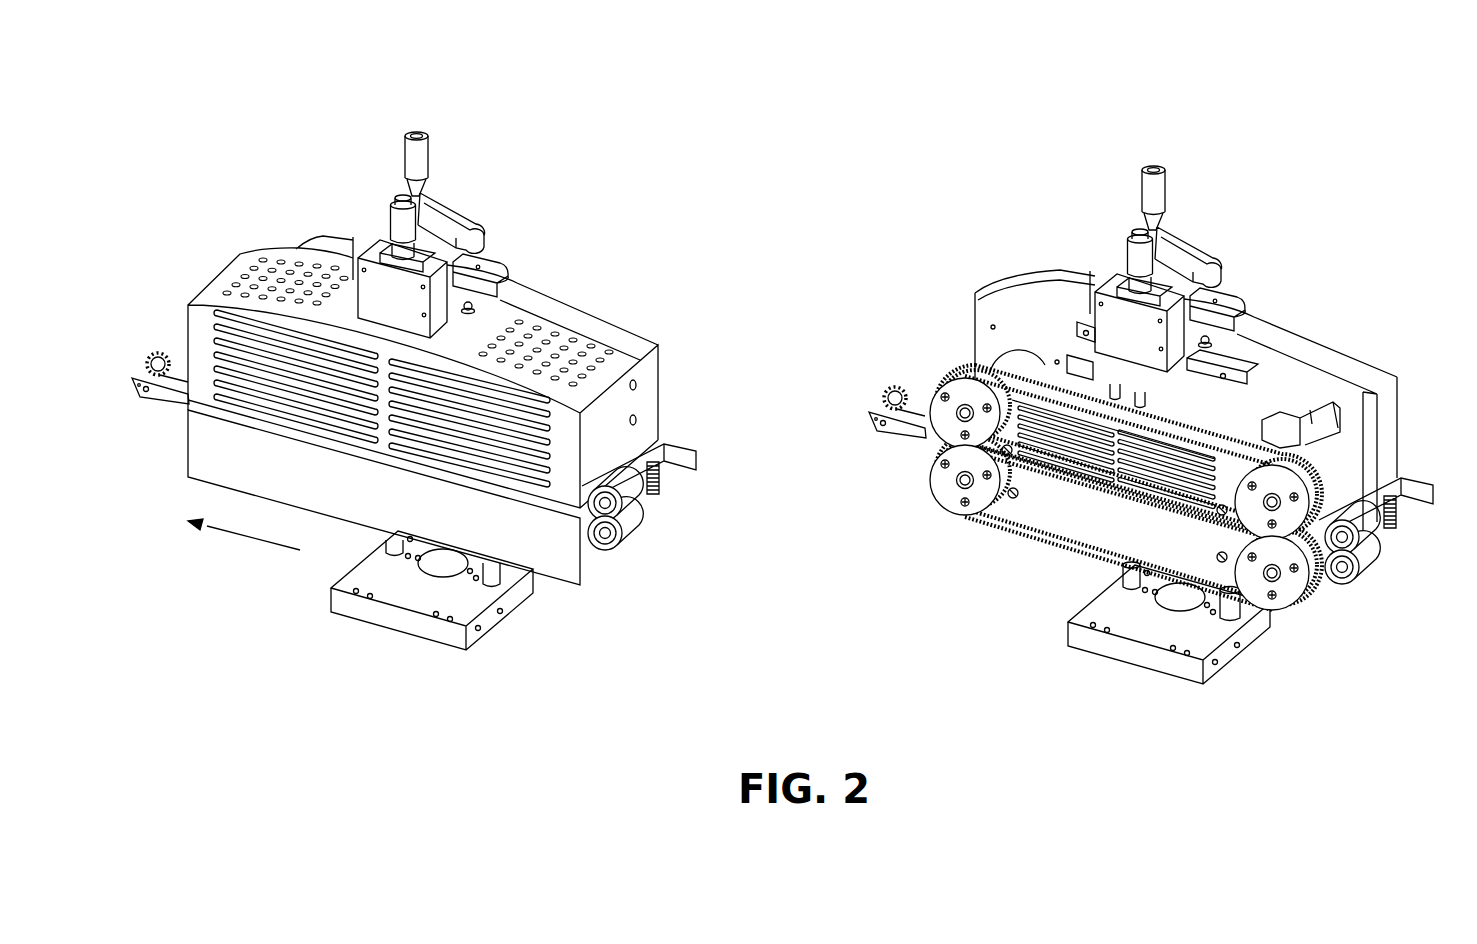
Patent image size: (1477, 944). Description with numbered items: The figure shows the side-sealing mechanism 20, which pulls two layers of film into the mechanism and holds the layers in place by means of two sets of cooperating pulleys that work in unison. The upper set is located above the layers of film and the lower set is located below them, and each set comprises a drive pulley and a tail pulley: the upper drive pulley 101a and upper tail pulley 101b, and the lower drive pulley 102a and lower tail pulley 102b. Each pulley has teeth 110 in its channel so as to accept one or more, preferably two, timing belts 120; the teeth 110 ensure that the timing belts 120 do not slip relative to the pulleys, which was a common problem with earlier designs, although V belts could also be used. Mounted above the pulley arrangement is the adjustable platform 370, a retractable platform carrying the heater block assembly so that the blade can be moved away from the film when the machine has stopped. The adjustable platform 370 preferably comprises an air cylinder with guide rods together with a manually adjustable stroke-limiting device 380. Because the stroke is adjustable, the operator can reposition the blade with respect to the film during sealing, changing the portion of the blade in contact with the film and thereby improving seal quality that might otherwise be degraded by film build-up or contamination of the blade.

The mechanism 20 is at (590, 227).
The manually adjustable stroke-limiting device 380 is at (1161, 192).
The adjustable platform 370 is at (1096, 285).
The teeth 110 is at (958, 372).
The timing belts 120 is at (1070, 540).
The drive pulley 101a is at (943, 389).
The tail pulley 101b is at (1297, 508).
The drive pulley 102a is at (947, 490).
The tail pulley 102b is at (1295, 593).